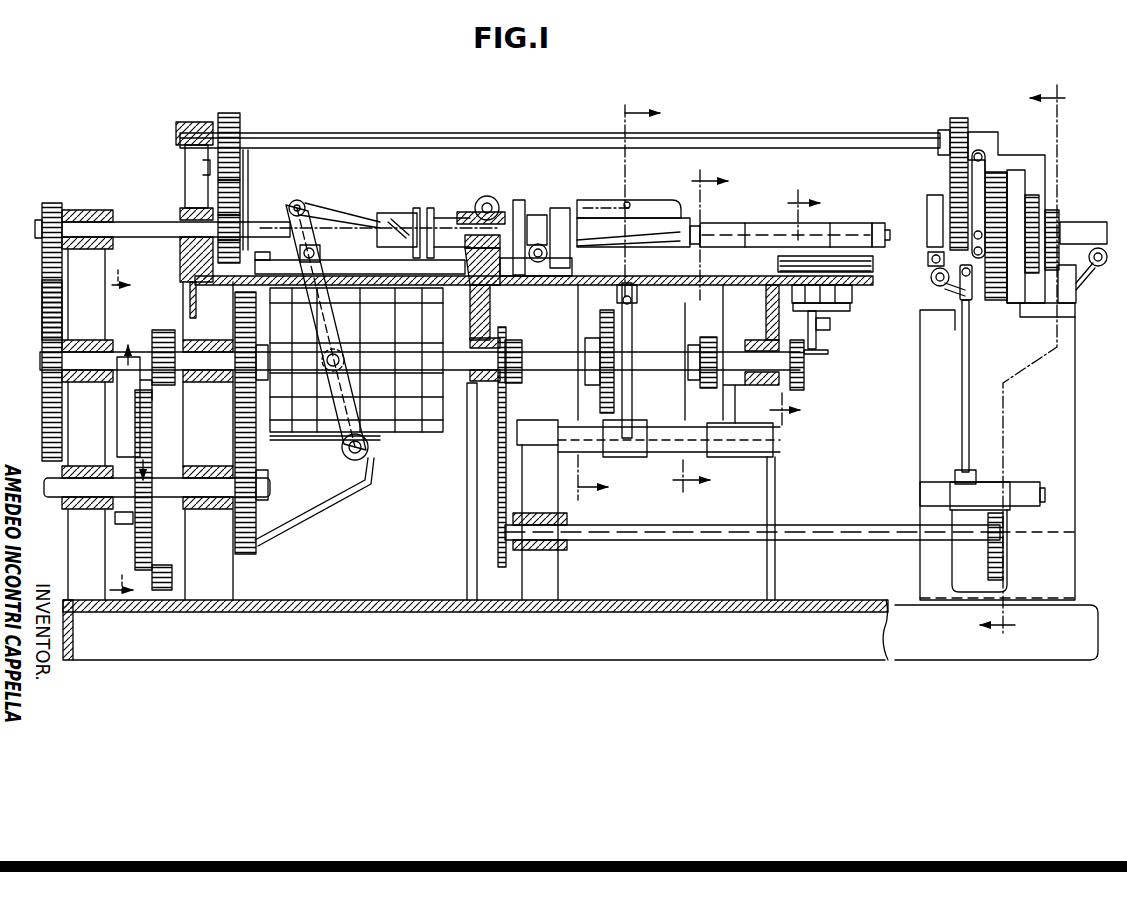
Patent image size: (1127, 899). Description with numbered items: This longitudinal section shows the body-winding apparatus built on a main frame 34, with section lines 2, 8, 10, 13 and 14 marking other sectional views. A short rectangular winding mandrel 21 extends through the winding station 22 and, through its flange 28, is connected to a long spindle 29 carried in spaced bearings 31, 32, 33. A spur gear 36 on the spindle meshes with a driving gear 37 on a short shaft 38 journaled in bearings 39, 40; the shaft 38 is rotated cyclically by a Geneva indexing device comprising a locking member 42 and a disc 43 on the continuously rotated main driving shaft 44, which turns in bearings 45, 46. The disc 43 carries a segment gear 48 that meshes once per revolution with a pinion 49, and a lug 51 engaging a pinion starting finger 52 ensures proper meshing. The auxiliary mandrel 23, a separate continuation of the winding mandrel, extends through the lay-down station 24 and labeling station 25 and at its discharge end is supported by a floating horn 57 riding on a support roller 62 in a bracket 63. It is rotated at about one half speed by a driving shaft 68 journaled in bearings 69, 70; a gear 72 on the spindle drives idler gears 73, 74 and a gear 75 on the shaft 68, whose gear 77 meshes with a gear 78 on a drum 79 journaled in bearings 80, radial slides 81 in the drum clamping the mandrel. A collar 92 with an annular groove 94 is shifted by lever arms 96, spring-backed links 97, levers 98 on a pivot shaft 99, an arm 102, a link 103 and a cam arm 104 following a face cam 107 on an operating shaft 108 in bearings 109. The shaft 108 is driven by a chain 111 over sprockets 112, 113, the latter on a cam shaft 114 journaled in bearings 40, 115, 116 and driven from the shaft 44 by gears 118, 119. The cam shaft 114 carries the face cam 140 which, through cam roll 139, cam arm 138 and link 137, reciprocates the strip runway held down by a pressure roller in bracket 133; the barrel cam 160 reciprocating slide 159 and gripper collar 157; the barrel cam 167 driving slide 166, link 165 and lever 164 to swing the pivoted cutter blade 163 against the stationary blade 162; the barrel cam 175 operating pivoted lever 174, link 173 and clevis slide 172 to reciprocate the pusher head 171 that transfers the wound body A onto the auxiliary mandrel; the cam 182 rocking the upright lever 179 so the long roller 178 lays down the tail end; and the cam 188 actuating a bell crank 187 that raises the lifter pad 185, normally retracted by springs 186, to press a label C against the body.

The section line 2- 2 is at (610, 301).
The section line 8- 8 is at (700, 333).
The section line 10- 10 is at (797, 304).
The section line 13- 13 is at (126, 424).
The section line 14- 14 is at (1017, 361).
The winding mandrel 21 is at (650, 220).
The winding station 22 is at (583, 205).
The auxiliary mandrel 23 is at (893, 225).
The lay-down station 24 is at (762, 212).
The labeling station 25 is at (828, 212).
The flange 28 is at (520, 200).
The spindle 29 is at (297, 205).
The bearing 31 is at (445, 200).
The bearing 32 is at (180, 210).
The bearing 33 is at (85, 212).
The frame 34 is at (318, 640).
The spur gear 36 is at (42, 210).
The driving gear 37 is at (42, 305).
The short shaft 38 is at (112, 335).
The bearing 39 is at (85, 385).
The bearing 40 is at (210, 385).
The locking member 42 is at (152, 405).
The Geneva disc 43 is at (160, 444).
The main driving shaft 44 is at (48, 480).
The bearing 45 is at (90, 510).
The bearing 46 is at (205, 512).
The segment gear 48 is at (172, 575).
The pinion 49 is at (163, 330).
The lug 51 is at (115, 525).
The pinion starting finger 52 is at (117, 432).
The support horn 57 is at (1085, 228).
The support roller 62 is at (1098, 266).
The bracket 63 is at (1078, 288).
The driving shaft 68 is at (383, 135).
The bearing 69 is at (192, 122).
The bearing 70 is at (985, 132).
The gear 72 is at (240, 215).
The idler gear 73 is at (240, 190).
The idler gear 74 is at (240, 170).
The gear 75 is at (232, 118).
The gear 77 is at (958, 118).
The gear 78 is at (952, 200).
The drum 79 is at (1030, 185).
The bearing 80 is at (928, 205).
The slide 81 is at (1035, 210).
The collar 92 is at (1000, 302).
The annular groove 94 is at (968, 300).
The lever arm 96 is at (990, 175).
The spring-backed link 97 is at (930, 262).
The lever 98 is at (935, 282).
The pivot shaft 99 is at (960, 292).
The arm 102 is at (940, 318).
The link 103 is at (962, 415).
The cam arm 104 is at (975, 480).
The face cam 107 is at (952, 570).
The operating shaft 108 is at (855, 530).
The bearing 109 is at (565, 550).
The chain 111 is at (467, 505).
The sprocket 112 is at (500, 567).
The sprocket 113 is at (520, 380).
The cam shaft 114 is at (553, 352).
The bearing 115 is at (490, 330).
The bearing 116 is at (740, 390).
The gear 118 is at (235, 420).
The gear 119 is at (250, 555).
The bracket 133 is at (632, 203).
The link 137 is at (632, 310).
The cam arm 138 is at (632, 380).
The cam roll 139 is at (608, 312).
The face cam 140 is at (600, 400).
The collar 157 is at (402, 213).
The slide 159 is at (380, 225).
The barrel cam 160 is at (430, 432).
The stationary cutter blade 162 is at (600, 205).
The pivoted blade 163 is at (632, 300).
The lever 164 is at (485, 198).
The link 165 is at (340, 222).
The slide 166 is at (268, 262).
The barrel cam 167 is at (295, 440).
The pusher head 171 is at (557, 208).
The clevis slide 172 is at (560, 275).
The link 173 is at (492, 290).
The pivoted lever 174 is at (370, 440).
The barrel cam 175 is at (370, 350).
The lay-down roller 178 is at (722, 225).
The lever 179 is at (720, 400).
The cam 182 is at (708, 340).
The lifter pad 185 is at (830, 312).
The spring 186 is at (825, 298).
The bell crank 187 is at (830, 348).
The cam 188 is at (805, 368).
The container body A is at (742, 228).
The label C is at (778, 264).